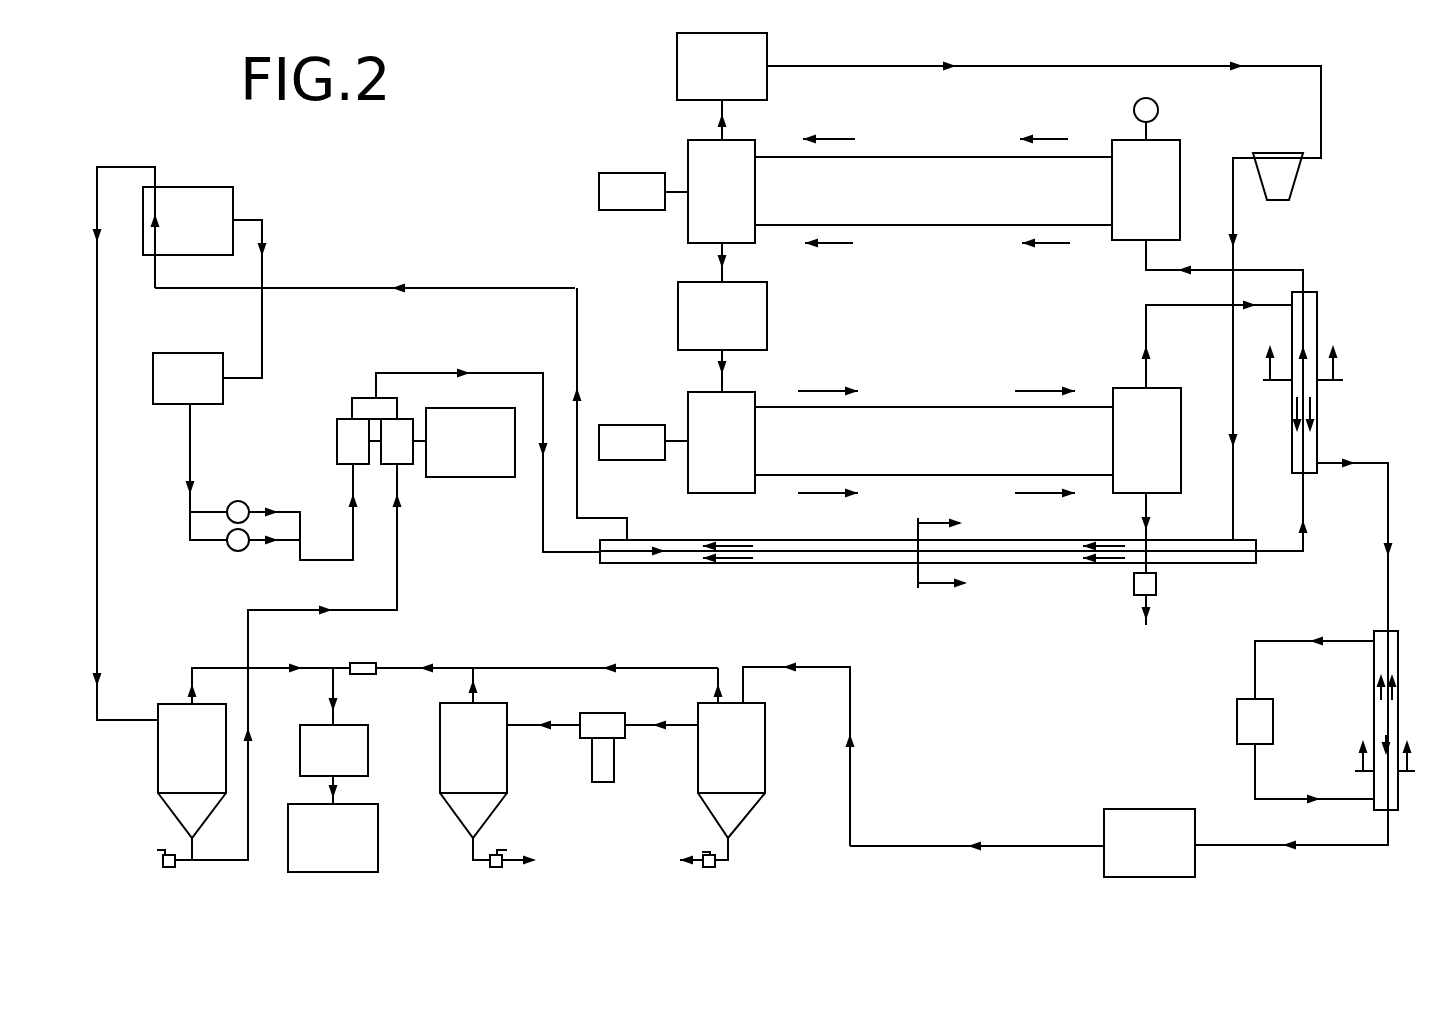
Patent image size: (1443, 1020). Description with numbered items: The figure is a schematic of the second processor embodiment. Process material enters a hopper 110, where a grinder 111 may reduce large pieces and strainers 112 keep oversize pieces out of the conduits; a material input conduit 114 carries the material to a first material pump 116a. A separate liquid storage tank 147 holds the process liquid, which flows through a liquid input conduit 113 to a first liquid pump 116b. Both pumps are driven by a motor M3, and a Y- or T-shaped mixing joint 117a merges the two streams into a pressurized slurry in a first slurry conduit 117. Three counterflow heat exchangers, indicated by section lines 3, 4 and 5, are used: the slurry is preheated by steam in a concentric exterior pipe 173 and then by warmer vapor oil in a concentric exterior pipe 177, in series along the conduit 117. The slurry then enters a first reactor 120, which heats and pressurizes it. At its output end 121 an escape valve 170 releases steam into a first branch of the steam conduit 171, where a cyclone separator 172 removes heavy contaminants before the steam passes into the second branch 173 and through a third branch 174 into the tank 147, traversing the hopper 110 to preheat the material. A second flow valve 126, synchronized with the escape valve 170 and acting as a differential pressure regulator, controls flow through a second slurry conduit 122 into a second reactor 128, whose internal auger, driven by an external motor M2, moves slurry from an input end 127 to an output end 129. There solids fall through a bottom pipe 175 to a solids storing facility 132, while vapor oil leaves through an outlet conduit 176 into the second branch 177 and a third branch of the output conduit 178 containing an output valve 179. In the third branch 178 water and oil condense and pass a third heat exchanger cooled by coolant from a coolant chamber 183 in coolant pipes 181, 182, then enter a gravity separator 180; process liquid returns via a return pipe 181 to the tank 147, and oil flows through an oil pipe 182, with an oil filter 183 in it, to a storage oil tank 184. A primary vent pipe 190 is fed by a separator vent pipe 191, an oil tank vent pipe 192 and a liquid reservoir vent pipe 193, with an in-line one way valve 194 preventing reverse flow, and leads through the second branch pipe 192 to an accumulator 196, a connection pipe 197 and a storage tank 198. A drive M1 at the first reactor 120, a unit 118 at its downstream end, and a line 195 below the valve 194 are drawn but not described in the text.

The hopper 110 is at (203, 197).
The grinder 111 is at (203, 393).
The strainers 112 is at (241, 505).
The liquid input conduit 113 is at (398, 408).
The material input conduit 114 is at (262, 283).
The first material pump 116a is at (336, 445).
The first liquid pump 116b is at (403, 462).
The first slurry conduit 117 is at (402, 373).
The mixing joint 117a is at (366, 388).
The screen unit 118 is at (1128, 249).
The first reactor 120 is at (948, 172).
The output end 121 is at (766, 242).
The second slurry conduit 122 is at (724, 273).
The second flow valve 126 is at (678, 313).
The input end 127 is at (748, 385).
The second reactor 128 is at (912, 422).
The output end 129 is at (1130, 376).
The solids storing facility 132 is at (1156, 583).
The liquid storage reservoir or tank 147 is at (172, 748).
The escape valve 170 is at (677, 57).
The first branch of steam conduit 171 is at (1030, 66).
The separator 172 is at (1282, 183).
The second branch of steam conduit 173 is at (790, 558).
The third branch of steam conduit 174 is at (120, 167).
The bottom pipe 175 is at (1148, 505).
The outlet conduit 176 is at (1217, 345).
The second branch of output conduit 177 is at (1312, 332).
The third branch of output conduit 178 is at (850, 700).
The output valve 179 is at (1150, 817).
The gravity separator 180 is at (757, 766).
The return pipe 181 is at (732, 840).
The oil pipe 182 is at (511, 725).
The oil filter 183 is at (610, 757).
The storage oil tank 184 is at (500, 757).
The primary vent pipe 190 is at (553, 668).
The separator vent pipe 191 is at (722, 675).
The oil tank vent pipe 192 is at (478, 672).
The liquid reservoir vent pipe 193 is at (218, 665).
The in-line one way valve 194 is at (376, 663).
The line 195 is at (336, 703).
The accumulator 196 is at (368, 741).
The connection pipe 197 is at (335, 790).
The storage tank 198 is at (368, 850).
The motor M1 is at (612, 195).
The external motor M2 is at (627, 447).
The motor M3 is at (488, 460).
The section line 3- 3 is at (932, 552).
The section line 4- 4 is at (1298, 374).
The section line 5- 5 is at (1382, 770).